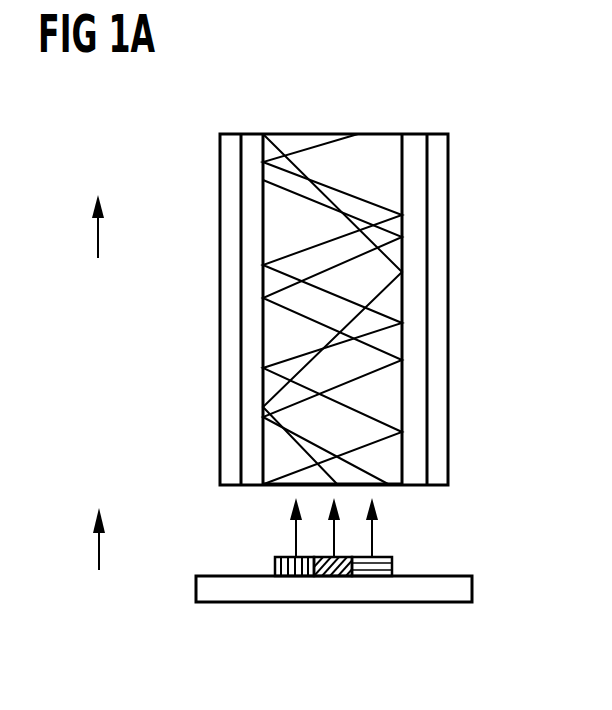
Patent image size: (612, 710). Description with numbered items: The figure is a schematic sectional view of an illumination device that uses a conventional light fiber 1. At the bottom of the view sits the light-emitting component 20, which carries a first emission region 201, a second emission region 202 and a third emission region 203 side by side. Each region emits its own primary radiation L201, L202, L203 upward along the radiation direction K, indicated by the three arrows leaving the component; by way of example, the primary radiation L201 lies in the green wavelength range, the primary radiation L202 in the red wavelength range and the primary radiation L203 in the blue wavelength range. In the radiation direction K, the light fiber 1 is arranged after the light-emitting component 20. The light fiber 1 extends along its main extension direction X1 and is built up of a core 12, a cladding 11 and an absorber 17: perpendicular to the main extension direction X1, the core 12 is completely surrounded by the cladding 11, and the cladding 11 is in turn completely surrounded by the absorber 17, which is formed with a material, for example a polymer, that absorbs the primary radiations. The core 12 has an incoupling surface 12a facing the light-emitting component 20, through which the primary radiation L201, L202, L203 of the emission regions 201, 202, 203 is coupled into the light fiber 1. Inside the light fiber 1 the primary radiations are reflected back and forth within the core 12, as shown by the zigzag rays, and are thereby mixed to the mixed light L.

The light fiber 1 is at (468, 242).
The cladding 11 is at (253, 143).
The core 12 is at (387, 145).
The incoupling surface 12a is at (300, 478).
The absorber 17 is at (440, 145).
The mixed light L is at (342, 147).
The main extension direction X1 is at (95, 237).
The radiation direction K is at (95, 548).
The light-emitting component 20 is at (491, 588).
The first emission region 201 is at (292, 578).
The second emission region 202 is at (343, 578).
The third emission region 203 is at (367, 578).
The primary radiation of the first emission region L201 is at (293, 522).
The primary radiation of the second emission region L202 is at (337, 540).
The primary radiation of the third emission region L203 is at (373, 522).